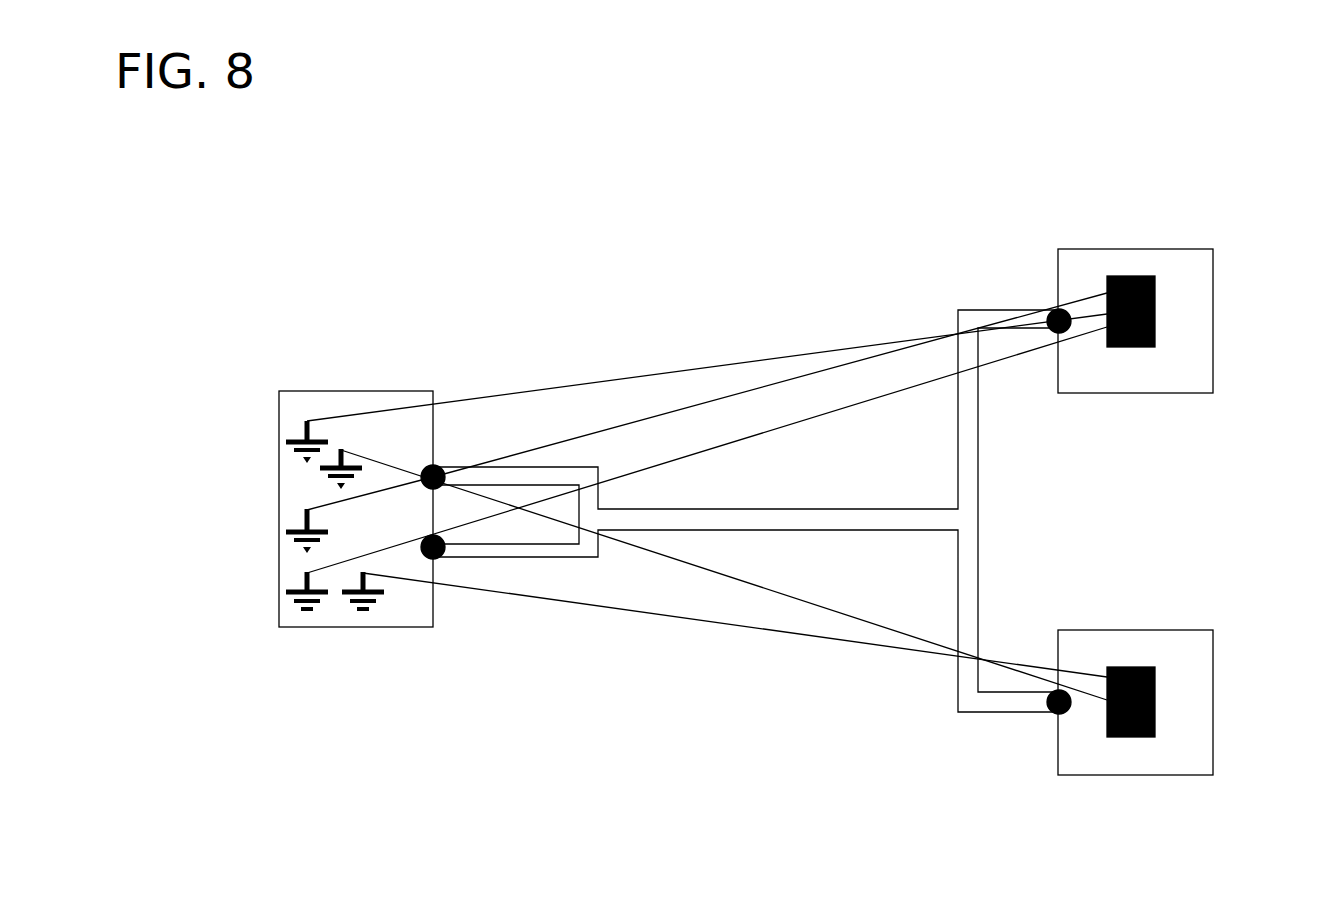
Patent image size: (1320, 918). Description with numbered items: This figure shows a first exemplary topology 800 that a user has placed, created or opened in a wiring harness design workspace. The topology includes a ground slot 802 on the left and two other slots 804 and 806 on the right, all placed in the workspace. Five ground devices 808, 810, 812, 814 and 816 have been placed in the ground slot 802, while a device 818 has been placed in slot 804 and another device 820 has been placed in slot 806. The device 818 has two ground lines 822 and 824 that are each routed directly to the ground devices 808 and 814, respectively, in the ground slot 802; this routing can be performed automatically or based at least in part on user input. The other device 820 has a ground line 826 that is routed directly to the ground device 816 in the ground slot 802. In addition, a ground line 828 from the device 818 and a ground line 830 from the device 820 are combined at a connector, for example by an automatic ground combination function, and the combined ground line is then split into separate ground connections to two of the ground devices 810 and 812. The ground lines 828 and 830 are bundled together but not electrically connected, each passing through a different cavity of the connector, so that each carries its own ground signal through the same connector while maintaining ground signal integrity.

The topology 800 is at (366, 222).
The ground slot 802 is at (305, 402).
The slot 804 is at (1185, 263).
The slot 806 is at (1178, 648).
The ground device 808 is at (298, 450).
The ground device 810 is at (338, 477).
The ground device 812 is at (300, 540).
The ground device 814 is at (312, 608).
The ground device 816 is at (360, 606).
The device 818 is at (1155, 300).
The device 820 is at (1155, 690).
The ground line 822 is at (615, 375).
The ground line 824 is at (925, 383).
The ground line 826 is at (655, 615).
The ground line 828 is at (772, 385).
The ground line 830 is at (840, 620).